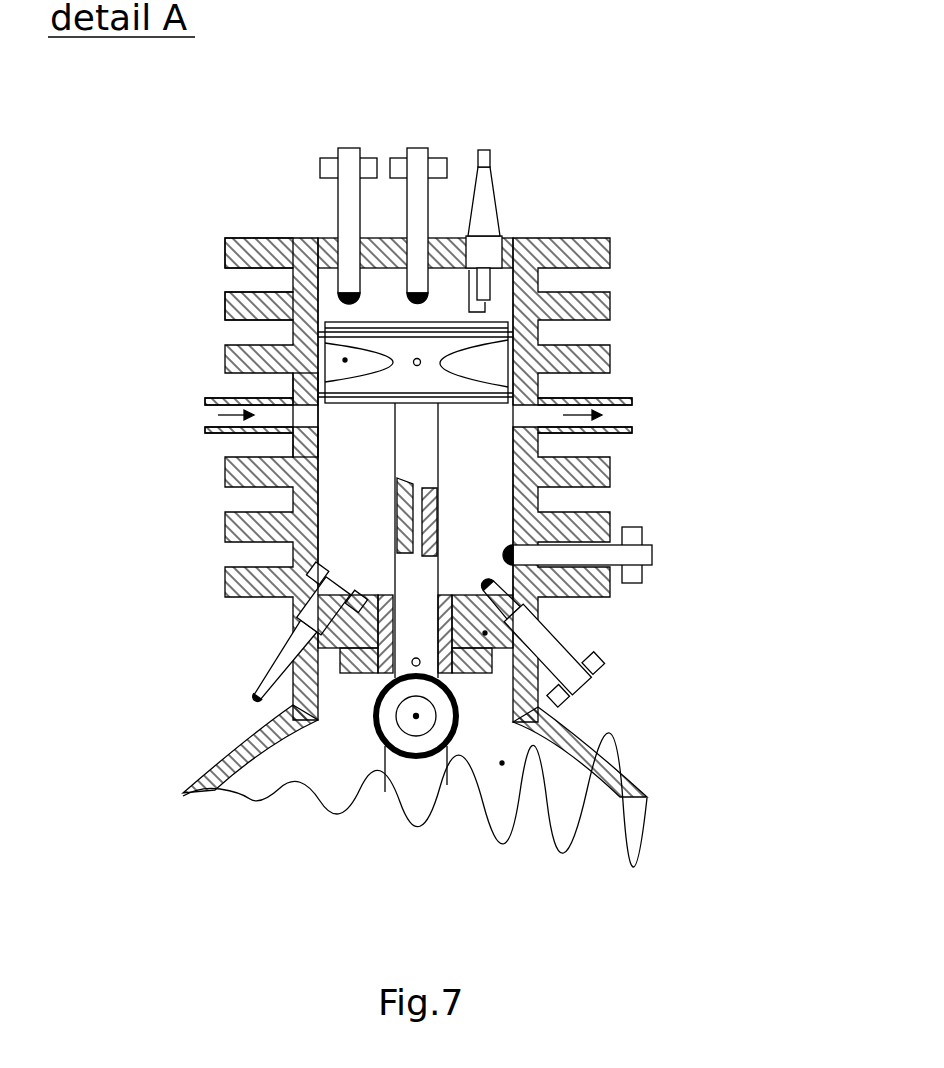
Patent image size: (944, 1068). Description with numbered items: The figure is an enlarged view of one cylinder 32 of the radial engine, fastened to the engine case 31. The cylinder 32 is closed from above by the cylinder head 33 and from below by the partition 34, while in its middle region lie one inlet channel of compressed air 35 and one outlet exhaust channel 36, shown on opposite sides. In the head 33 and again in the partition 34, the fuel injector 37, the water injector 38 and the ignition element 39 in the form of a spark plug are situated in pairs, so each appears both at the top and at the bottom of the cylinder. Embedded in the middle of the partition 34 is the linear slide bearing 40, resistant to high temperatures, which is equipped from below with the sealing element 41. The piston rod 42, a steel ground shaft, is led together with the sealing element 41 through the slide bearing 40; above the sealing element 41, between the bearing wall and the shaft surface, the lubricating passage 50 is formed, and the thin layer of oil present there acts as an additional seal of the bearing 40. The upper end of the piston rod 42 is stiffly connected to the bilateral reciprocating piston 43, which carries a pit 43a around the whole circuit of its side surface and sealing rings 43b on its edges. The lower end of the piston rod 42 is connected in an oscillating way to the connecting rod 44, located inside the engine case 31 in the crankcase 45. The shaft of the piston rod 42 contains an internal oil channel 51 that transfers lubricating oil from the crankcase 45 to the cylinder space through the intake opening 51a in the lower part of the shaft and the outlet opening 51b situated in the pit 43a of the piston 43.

The engine case 31 is at (593, 752).
The cylinder 32 is at (544, 305).
The cylinder head 33 is at (484, 371).
The partition 34 is at (485, 633).
The inlet channel of compressed air 35 is at (205, 405).
The outlet exhaust channel 36 is at (600, 400).
The fuel injector 37 is at (422, 158).
The water injector 38 is at (345, 212).
The ignition element 39 is at (317, 435).
The linear slide bearing 40 is at (225, 722).
The sealing element 41 is at (392, 677).
The piston rod 42 is at (407, 450).
The bilateral reciprocating piston 43 is at (363, 429).
The pit 43a is at (225, 297).
The sealing rings 43b is at (233, 240).
The connecting rod 44 is at (422, 782).
The crankcase 45 is at (502, 763).
The lubricating passage 50 is at (335, 620).
The internal oil channel 51 is at (232, 626).
The intake opening 51a is at (412, 666).
The outlet opening 51b is at (420, 362).